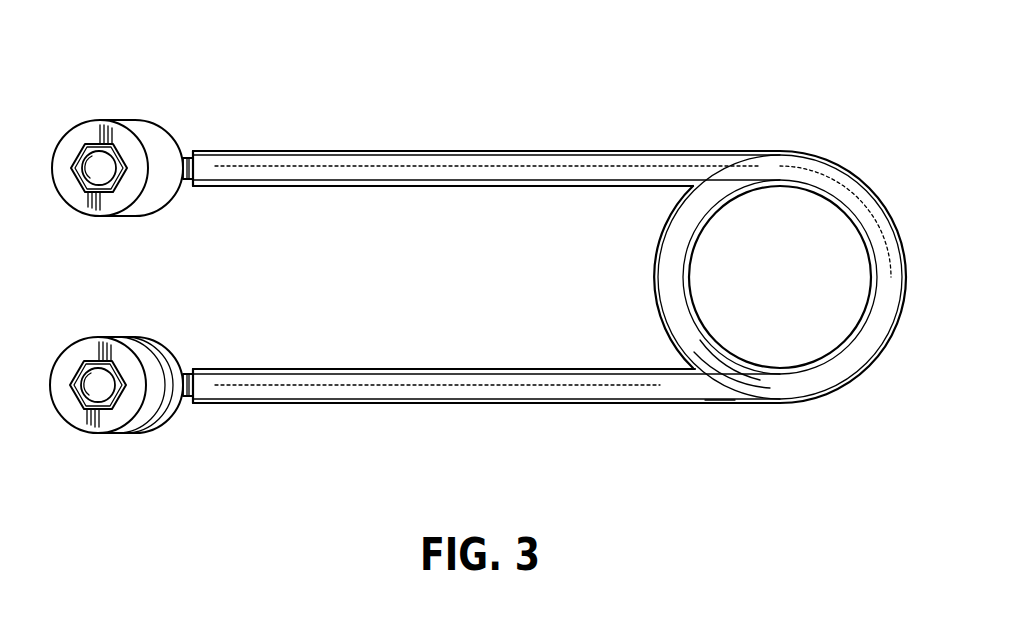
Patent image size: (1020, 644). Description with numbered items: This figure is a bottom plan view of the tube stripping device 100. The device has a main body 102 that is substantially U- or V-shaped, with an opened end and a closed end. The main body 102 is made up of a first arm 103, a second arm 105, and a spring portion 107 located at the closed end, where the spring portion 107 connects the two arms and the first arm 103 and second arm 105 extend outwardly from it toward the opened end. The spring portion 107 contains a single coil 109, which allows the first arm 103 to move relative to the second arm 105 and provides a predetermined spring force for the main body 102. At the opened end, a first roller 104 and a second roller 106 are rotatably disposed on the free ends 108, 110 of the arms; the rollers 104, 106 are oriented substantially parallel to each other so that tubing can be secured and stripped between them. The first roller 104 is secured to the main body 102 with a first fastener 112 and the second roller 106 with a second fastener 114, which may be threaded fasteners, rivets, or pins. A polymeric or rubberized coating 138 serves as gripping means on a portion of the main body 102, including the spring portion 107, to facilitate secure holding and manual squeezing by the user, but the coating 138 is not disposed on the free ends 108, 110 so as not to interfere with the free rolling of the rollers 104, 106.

The tube stripping device 100 is at (620, 100).
The main body 102 is at (721, 407).
The first arm 103 is at (404, 150).
The first roller 104 is at (118, 122).
The second arm 105 is at (453, 405).
The second roller 106 is at (146, 340).
The spring portion 107 is at (893, 227).
The free end of first arm 108 is at (188, 156).
The coil 109 is at (652, 279).
The free end of second arm 110 is at (188, 372).
The first fastener 112 is at (88, 165).
The second fastener 114 is at (88, 382).
The polymeric or rubberized coating 138 is at (460, 190).